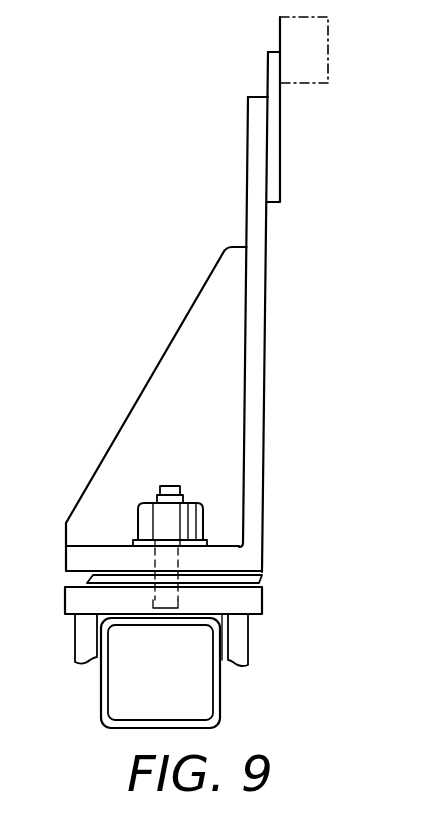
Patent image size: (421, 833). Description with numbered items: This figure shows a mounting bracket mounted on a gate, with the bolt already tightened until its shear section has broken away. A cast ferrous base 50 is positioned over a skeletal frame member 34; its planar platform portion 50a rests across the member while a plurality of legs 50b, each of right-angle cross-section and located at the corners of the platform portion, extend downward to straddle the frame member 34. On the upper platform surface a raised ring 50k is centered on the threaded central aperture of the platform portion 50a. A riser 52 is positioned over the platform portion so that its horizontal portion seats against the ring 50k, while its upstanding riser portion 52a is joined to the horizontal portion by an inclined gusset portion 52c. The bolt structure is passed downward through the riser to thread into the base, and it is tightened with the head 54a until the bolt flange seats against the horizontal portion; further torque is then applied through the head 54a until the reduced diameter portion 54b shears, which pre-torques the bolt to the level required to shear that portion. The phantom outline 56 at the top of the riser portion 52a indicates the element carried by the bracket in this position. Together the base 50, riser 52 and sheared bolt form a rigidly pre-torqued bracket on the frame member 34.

The frame member 34 is at (222, 708).
The base 50 is at (50, 652).
The platform portion 50a is at (262, 610).
The legs 50b is at (248, 663).
The raised ring 50k is at (250, 580).
The riser 52 is at (313, 343).
The riser portion 52a is at (263, 472).
The gusset portion 52c is at (203, 290).
The head 54a is at (138, 512).
The reduced diameter portion 54b is at (160, 490).
The mounted accessory (phantom) 56 is at (328, 83).